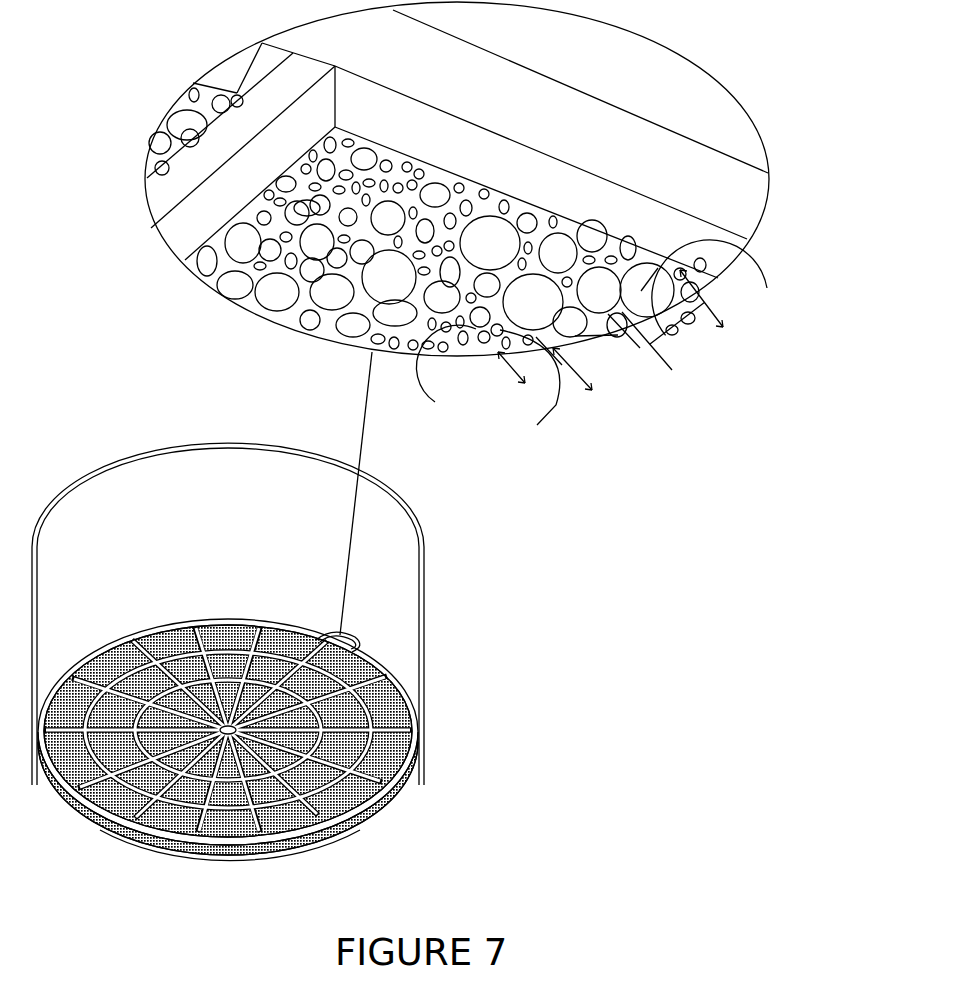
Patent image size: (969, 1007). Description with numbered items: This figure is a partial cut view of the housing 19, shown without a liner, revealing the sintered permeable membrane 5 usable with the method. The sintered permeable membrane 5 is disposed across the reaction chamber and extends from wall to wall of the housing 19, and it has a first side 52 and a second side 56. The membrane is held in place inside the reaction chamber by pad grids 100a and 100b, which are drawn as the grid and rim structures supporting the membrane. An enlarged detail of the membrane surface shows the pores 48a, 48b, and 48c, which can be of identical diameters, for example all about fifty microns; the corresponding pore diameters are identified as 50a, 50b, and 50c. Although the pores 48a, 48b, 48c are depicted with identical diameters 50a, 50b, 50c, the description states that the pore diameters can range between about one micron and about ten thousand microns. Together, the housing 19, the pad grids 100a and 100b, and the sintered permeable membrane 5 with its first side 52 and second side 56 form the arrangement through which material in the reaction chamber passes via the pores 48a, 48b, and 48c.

The sintered permeable membrane 5 is at (82, 815).
The housing 19 is at (423, 597).
The first side 52 is at (400, 795).
The second side 56 is at (397, 683).
The pad grid 100a is at (137, 843).
The pad grid 100b is at (713, 177).
The pore 48a is at (446, 381).
The pore 48b is at (523, 384).
The pore 48c is at (720, 288).
The pore diameter 50a is at (520, 380).
The pore diameter 50b is at (596, 352).
The pore diameter 50c is at (672, 320).